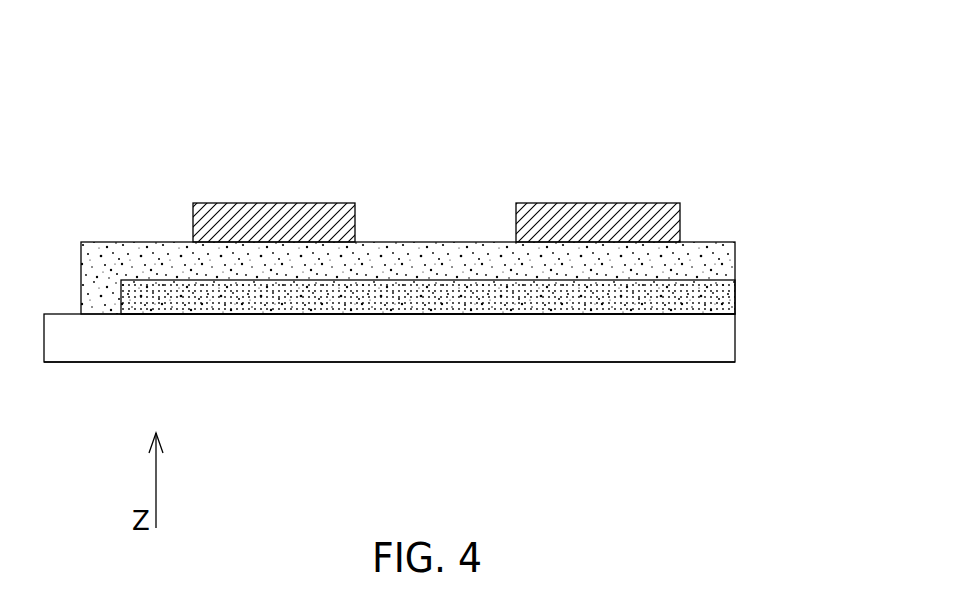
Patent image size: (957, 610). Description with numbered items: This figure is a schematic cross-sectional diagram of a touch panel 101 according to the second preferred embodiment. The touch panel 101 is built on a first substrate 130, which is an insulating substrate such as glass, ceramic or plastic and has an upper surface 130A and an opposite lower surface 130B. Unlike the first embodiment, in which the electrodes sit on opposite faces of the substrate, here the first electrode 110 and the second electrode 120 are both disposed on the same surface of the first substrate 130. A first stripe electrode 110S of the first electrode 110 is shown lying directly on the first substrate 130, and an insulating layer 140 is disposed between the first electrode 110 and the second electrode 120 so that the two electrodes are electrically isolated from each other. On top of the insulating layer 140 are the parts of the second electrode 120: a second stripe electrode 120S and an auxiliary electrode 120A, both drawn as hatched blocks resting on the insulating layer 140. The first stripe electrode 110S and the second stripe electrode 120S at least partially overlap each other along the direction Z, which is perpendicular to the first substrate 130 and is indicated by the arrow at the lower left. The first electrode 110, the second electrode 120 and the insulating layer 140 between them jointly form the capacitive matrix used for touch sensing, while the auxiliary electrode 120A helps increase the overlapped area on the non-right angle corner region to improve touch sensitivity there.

The touch panel 101 is at (660, 105).
The first electrode 110 is at (428, 357).
The first stripe electrode 110S is at (408, 304).
The second electrode 120 is at (436, 190).
The auxiliary electrode 120A is at (268, 218).
The second stripe electrode 120S is at (603, 217).
The first substrate 130 is at (265, 345).
The upper surface 130A is at (703, 314).
The lower surface 130B is at (702, 362).
The insulating layer 140 is at (435, 265).